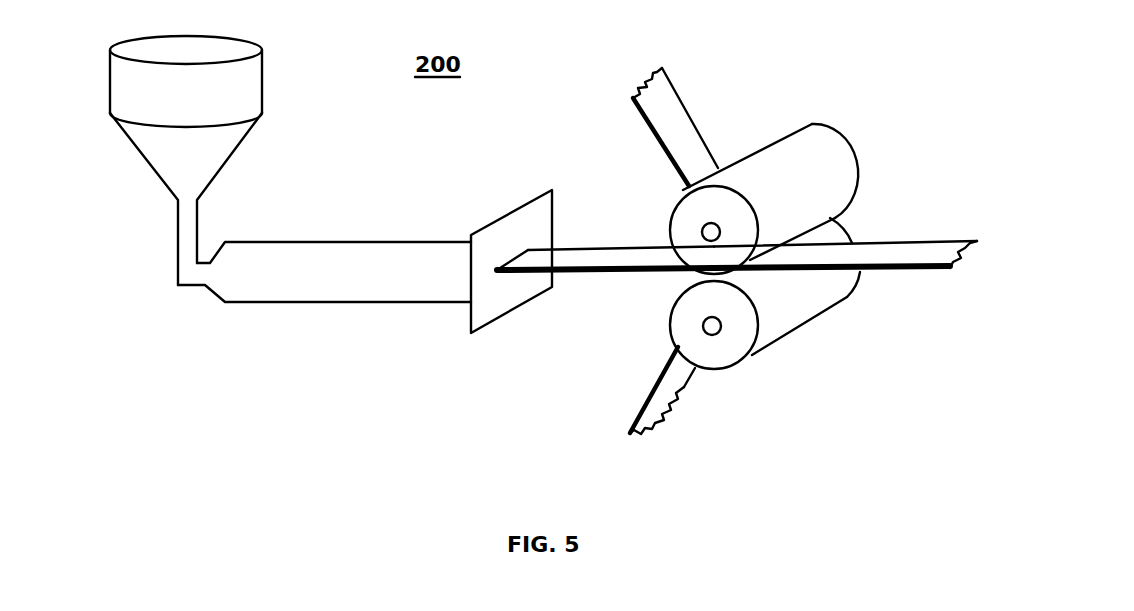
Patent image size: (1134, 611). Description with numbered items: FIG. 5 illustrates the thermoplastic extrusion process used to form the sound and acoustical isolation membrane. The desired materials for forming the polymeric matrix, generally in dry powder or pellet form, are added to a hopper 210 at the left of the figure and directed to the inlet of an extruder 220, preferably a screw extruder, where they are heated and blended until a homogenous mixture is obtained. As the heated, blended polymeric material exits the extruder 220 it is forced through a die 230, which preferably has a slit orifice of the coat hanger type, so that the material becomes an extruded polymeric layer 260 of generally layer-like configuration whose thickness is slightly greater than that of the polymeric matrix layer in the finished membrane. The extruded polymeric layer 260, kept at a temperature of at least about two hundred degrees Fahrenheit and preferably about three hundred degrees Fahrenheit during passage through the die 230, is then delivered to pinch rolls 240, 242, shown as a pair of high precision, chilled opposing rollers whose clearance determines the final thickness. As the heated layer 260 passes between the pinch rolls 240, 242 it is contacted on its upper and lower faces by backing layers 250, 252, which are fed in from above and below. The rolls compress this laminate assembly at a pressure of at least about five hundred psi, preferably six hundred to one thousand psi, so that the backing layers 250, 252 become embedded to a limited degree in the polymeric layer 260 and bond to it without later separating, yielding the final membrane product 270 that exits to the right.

The hopper 210 is at (250, 78).
The extruder 220 is at (315, 288).
The die 230 is at (493, 315).
The pinch roll 240 is at (805, 310).
The pinch roll 242 is at (835, 148).
The backing layer 250 is at (680, 127).
The backing layer 252 is at (677, 383).
The extruded polymeric layer 260 is at (613, 259).
The final membrane product 270 is at (918, 250).